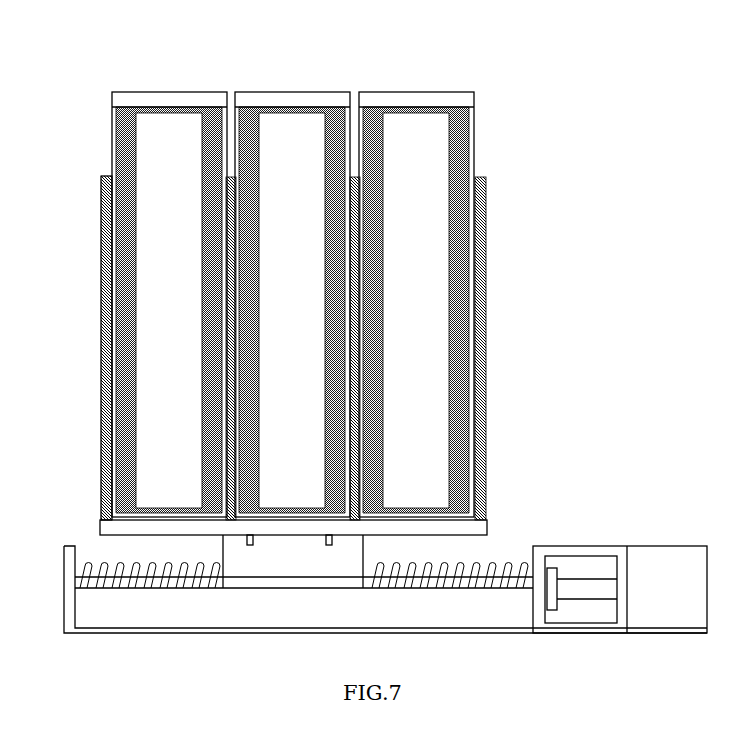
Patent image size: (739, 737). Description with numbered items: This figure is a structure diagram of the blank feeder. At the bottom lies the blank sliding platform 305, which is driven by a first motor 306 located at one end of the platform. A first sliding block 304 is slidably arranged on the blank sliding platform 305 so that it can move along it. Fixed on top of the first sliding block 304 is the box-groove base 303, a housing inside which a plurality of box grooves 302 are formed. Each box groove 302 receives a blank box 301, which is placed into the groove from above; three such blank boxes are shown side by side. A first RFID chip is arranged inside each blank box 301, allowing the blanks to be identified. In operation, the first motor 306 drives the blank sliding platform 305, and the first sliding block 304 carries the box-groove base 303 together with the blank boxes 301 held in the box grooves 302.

The blank box 301 is at (135, 97).
The box groove 302 is at (107, 173).
The box-groove base 303 is at (102, 450).
The first sliding block 304 is at (340, 568).
The blank sliding platform 305 is at (338, 622).
The first motor 306 is at (697, 587).